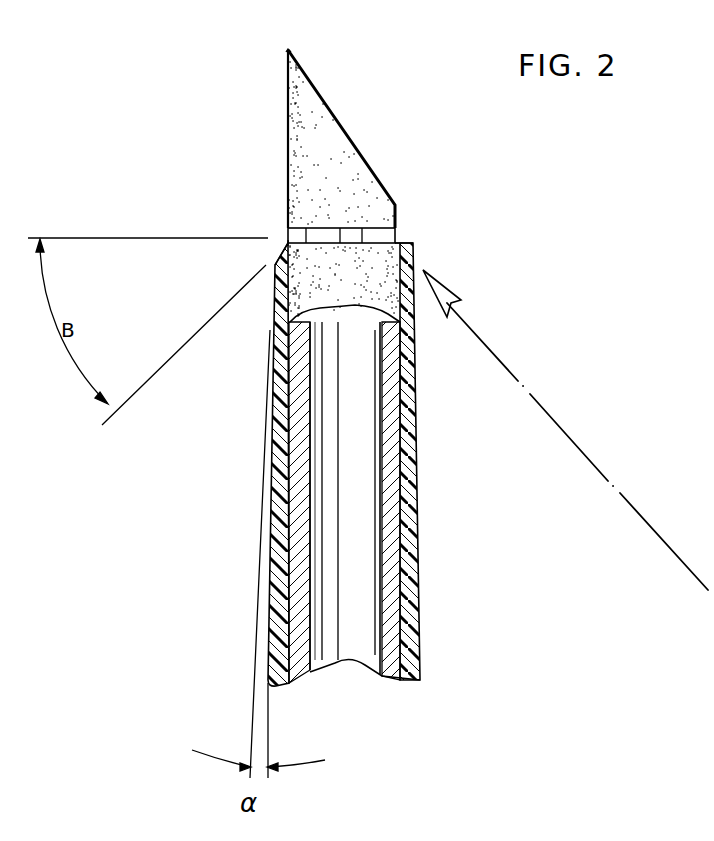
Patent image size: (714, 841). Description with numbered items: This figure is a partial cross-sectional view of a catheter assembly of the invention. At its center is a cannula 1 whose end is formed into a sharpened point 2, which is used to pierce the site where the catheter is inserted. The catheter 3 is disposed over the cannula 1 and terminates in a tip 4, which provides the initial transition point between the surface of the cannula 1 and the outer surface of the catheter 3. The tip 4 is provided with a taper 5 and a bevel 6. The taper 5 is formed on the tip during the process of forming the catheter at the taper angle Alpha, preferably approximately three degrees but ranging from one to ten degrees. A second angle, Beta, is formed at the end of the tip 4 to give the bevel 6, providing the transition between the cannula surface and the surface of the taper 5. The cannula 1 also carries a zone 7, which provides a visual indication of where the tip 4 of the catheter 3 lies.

The cannula 1 is at (308, 145).
The sharpened point 2 is at (290, 50).
The catheter 3 is at (270, 355).
The tip 4 is at (416, 250).
The taper 5 is at (268, 408).
The bevel 6 is at (279, 238).
The zone 7 is at (378, 232).